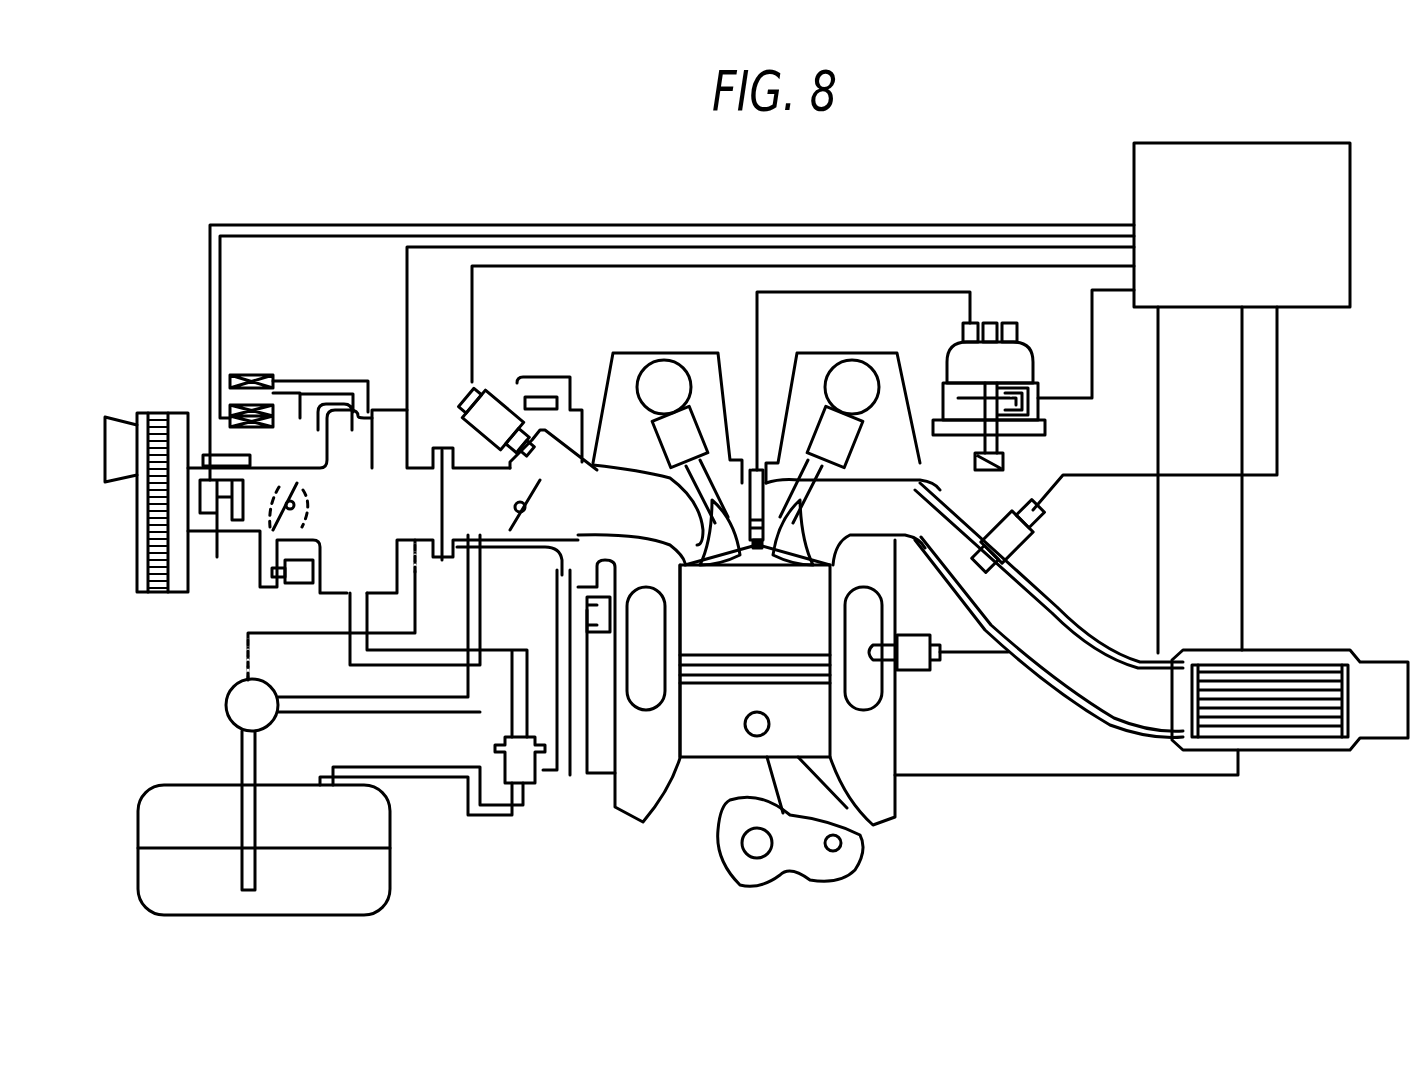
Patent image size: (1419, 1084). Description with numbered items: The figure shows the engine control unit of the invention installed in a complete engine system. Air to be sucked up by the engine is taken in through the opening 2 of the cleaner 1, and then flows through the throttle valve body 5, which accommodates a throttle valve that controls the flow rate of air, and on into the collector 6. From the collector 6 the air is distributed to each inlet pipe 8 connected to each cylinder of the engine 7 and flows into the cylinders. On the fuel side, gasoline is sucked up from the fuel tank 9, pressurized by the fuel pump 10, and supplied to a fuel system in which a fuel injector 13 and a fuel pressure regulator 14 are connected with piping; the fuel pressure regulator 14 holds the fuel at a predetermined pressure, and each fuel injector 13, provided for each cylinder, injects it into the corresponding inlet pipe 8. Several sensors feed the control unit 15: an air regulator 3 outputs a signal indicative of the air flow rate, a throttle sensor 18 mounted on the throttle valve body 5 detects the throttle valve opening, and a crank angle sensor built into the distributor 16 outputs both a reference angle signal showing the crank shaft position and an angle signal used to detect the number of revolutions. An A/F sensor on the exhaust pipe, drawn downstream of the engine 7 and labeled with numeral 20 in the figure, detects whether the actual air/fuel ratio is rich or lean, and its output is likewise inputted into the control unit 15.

The cleaner 1 is at (158, 415).
The opening 2 is at (120, 420).
The air regulator 3 is at (216, 545).
The throttle valve body 5 is at (262, 545).
The collector 6 is at (374, 440).
The engine 7 is at (692, 352).
The inlet pipe 8 is at (600, 493).
The fuel tank 9 is at (170, 785).
The fuel pump 10 is at (228, 700).
The fuel injector 13 is at (470, 410).
The fuel pressure regulator 14 is at (530, 783).
The control unit 15 is at (1134, 170).
The distributor 16 is at (1030, 342).
The throttle sensor 18 is at (272, 582).
The oxygen sensor 20 is at (1040, 545).